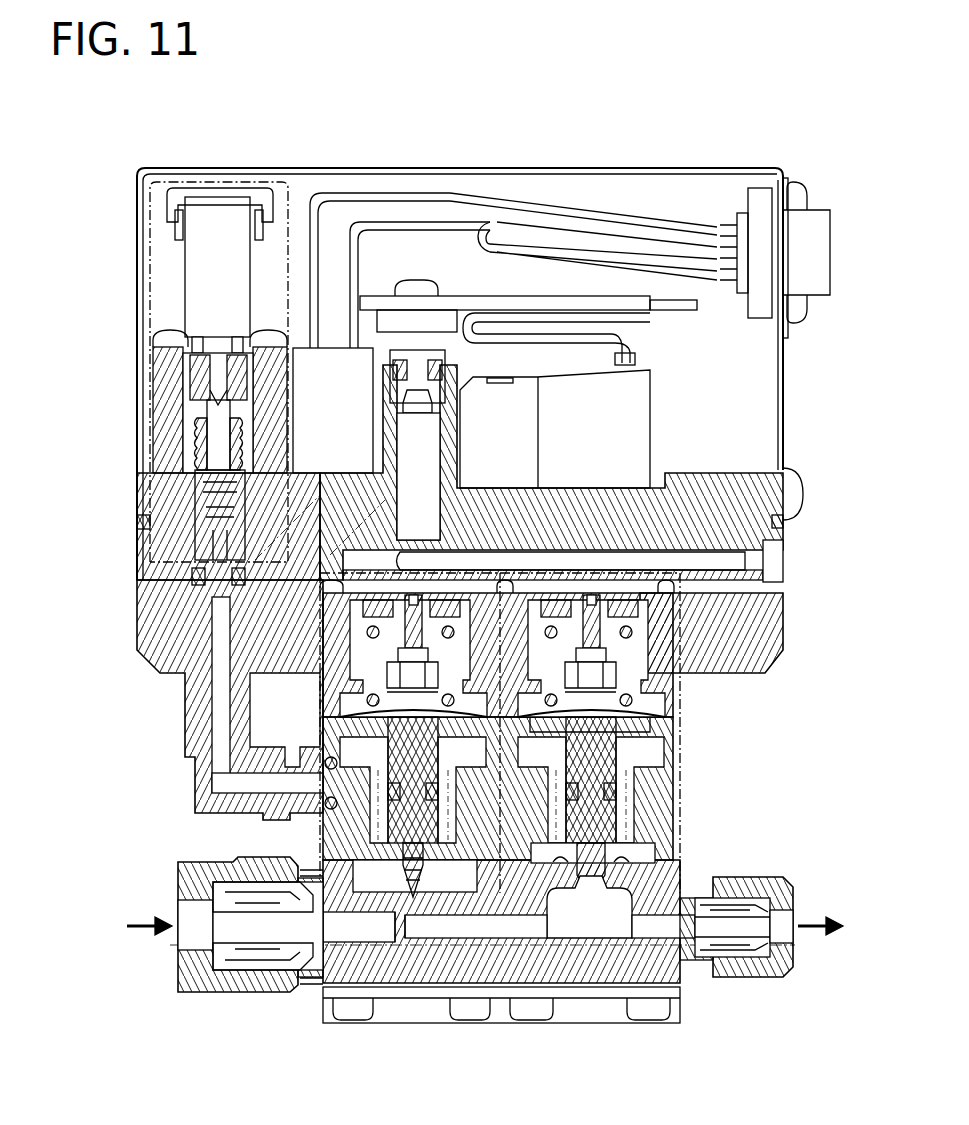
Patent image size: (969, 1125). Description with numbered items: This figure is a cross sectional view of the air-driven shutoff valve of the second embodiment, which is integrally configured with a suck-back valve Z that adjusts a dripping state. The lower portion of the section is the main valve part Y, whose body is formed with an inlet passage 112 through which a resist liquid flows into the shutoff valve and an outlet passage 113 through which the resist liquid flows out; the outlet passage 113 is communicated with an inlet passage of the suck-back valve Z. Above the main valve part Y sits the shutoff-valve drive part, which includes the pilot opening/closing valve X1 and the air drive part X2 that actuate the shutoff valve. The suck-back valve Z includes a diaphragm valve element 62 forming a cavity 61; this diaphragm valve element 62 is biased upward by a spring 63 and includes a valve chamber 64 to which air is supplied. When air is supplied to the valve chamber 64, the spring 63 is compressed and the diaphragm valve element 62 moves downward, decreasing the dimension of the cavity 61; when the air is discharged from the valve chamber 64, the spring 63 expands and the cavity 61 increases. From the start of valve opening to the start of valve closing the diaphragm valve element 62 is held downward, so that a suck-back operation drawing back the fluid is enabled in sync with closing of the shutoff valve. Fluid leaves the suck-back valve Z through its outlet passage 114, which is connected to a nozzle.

The pilot opening/closing valve X1 is at (150, 283).
The air drive part X2 is at (320, 843).
The suck-back valve Z is at (682, 803).
The main valve part Y is at (103, 863).
The cavity 61 is at (590, 925).
The diaphragm valve element 62 is at (620, 880).
The spring 63 is at (653, 747).
The valve chamber 64 is at (623, 663).
The inlet passage 112 is at (232, 957).
The outlet passage 113 is at (430, 935).
The outlet passage 114 is at (660, 930).